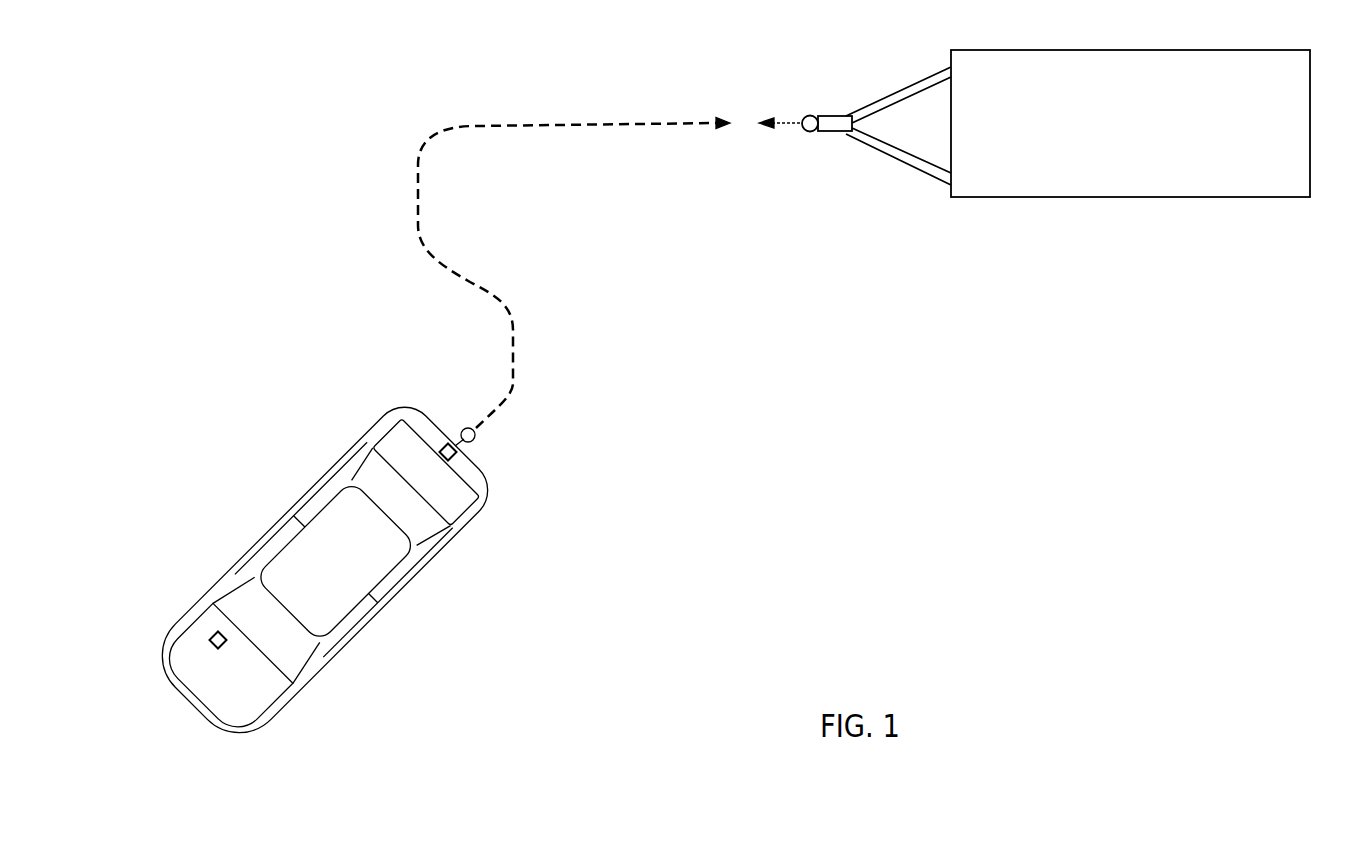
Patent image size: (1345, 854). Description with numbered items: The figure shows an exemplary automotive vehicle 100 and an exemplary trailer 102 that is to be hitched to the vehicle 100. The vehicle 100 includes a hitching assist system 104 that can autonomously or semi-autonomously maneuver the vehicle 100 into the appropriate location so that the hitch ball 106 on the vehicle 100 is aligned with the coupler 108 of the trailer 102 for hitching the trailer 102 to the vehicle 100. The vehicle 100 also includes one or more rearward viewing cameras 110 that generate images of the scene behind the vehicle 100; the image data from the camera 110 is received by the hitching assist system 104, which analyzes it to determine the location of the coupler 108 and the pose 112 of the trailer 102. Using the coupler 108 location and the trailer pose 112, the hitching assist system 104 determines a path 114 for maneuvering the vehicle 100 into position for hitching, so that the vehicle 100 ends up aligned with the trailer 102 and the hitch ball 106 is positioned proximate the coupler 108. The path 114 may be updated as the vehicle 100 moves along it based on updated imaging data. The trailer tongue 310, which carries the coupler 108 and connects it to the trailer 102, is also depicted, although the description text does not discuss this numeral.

The automotive vehicle 100 is at (298, 693).
The trailer 102 is at (1040, 197).
The hitching assist system 104 is at (212, 645).
The hitch ball 106 is at (473, 441).
The coupler 108 is at (805, 132).
The rearward viewing camera 110 is at (460, 453).
The pose 112 is at (787, 122).
The path 114 is at (422, 233).
The trailer tongue 310 is at (897, 162).